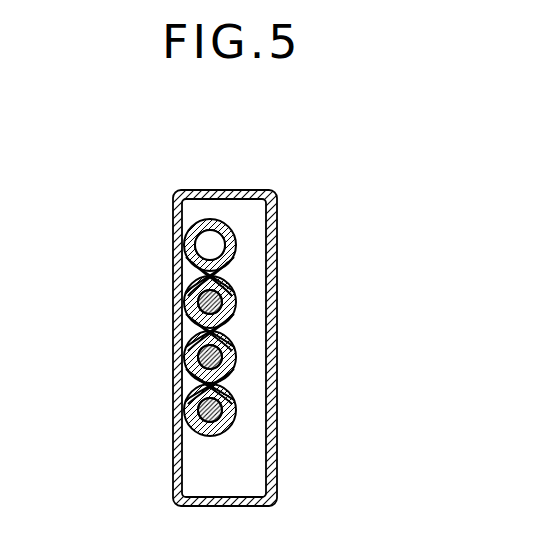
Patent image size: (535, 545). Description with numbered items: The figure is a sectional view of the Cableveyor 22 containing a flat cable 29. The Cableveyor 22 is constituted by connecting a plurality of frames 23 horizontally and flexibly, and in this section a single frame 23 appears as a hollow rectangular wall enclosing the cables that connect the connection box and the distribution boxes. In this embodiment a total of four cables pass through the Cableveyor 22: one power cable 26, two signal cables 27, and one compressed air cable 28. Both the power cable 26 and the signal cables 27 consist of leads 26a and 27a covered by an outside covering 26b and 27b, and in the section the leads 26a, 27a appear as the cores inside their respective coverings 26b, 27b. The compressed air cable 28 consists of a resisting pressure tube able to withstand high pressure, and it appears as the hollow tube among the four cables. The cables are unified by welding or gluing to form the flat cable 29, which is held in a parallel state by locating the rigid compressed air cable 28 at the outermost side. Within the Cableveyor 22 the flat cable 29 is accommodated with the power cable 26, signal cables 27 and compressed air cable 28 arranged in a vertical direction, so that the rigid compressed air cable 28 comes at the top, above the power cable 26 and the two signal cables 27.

The Cableveyor 22 is at (227, 188).
The frame 23 is at (276, 191).
The power cable 26 is at (243, 298).
The leads 26a is at (195, 306).
The outside covering 26b is at (195, 278).
The signal cable 27 is at (243, 357).
The leads 27a is at (206, 411).
The outside covering 27b is at (195, 330).
The compressed air cable 28 is at (234, 246).
The flat cable 29 is at (345, 245).